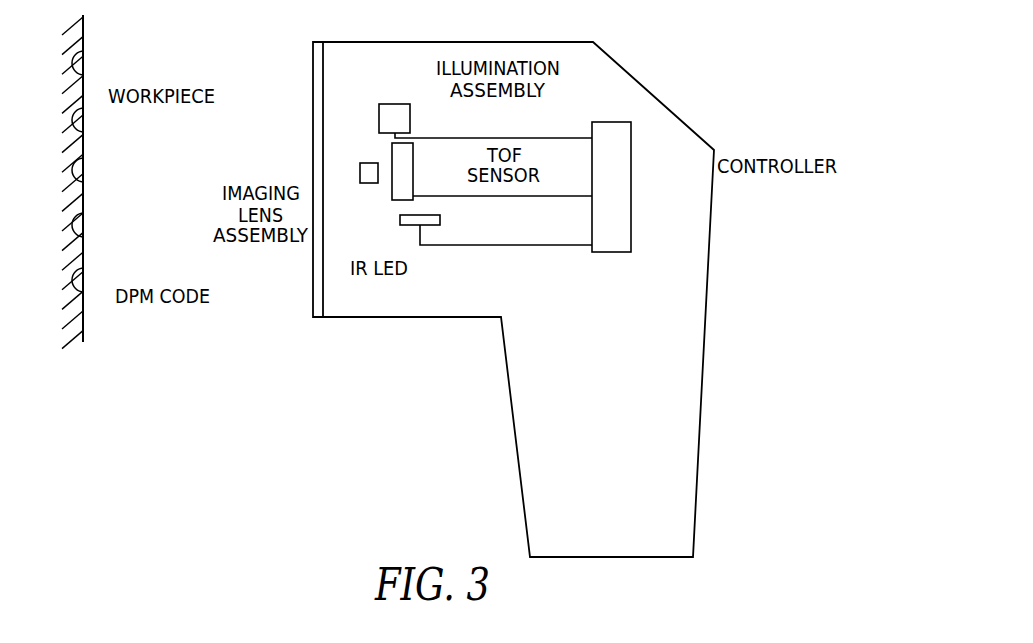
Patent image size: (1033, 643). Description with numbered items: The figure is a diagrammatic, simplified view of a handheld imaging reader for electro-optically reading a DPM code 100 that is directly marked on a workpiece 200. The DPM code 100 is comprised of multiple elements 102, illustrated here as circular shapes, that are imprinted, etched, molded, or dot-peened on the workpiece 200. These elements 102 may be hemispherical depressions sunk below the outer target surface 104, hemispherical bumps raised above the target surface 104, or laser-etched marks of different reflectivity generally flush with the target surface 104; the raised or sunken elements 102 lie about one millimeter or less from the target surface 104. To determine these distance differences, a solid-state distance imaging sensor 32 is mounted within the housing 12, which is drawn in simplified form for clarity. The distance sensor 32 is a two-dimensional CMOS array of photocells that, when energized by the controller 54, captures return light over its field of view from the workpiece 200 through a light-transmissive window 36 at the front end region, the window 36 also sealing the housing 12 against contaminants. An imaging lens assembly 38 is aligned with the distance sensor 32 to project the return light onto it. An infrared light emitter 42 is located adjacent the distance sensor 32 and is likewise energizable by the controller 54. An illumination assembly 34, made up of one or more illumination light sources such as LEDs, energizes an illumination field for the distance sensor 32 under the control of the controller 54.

The housing 12 is at (662, 89).
The distance imaging sensor 32 is at (413, 172).
The illumination assembly 34 is at (395, 104).
The light-transmissive window 36 is at (313, 46).
The imaging lens assembly 38 is at (360, 172).
The infrared light emitter 42 is at (400, 217).
The controller 54 is at (631, 188).
The DPM code 100 is at (87, 238).
The elements 102 is at (85, 170).
The target surface 104 is at (85, 27).
The workpiece 200 is at (86, 103).